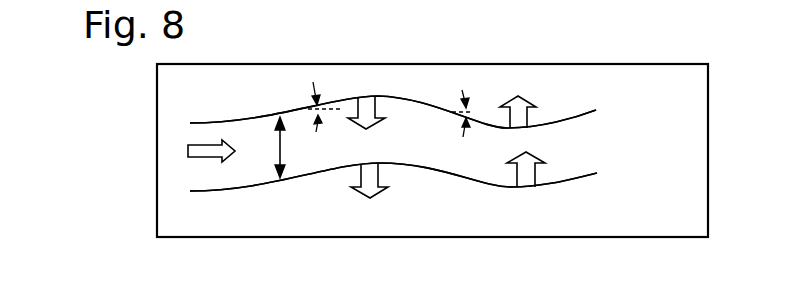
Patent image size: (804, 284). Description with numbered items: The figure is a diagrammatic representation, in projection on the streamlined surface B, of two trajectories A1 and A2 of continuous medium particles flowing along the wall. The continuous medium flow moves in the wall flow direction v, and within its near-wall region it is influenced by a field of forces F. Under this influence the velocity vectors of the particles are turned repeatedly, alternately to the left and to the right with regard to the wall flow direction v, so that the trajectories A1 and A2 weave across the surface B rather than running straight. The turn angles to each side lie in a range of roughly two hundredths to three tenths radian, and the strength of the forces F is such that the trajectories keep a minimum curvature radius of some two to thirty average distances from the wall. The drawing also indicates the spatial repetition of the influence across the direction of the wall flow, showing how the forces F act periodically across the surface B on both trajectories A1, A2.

The streamlined surface B is at (203, 97).
The first trajectory A1 is at (408, 102).
The second trajectory A2 is at (455, 181).
The wall flow direction v is at (211, 161).
The field of forces F is at (378, 121).